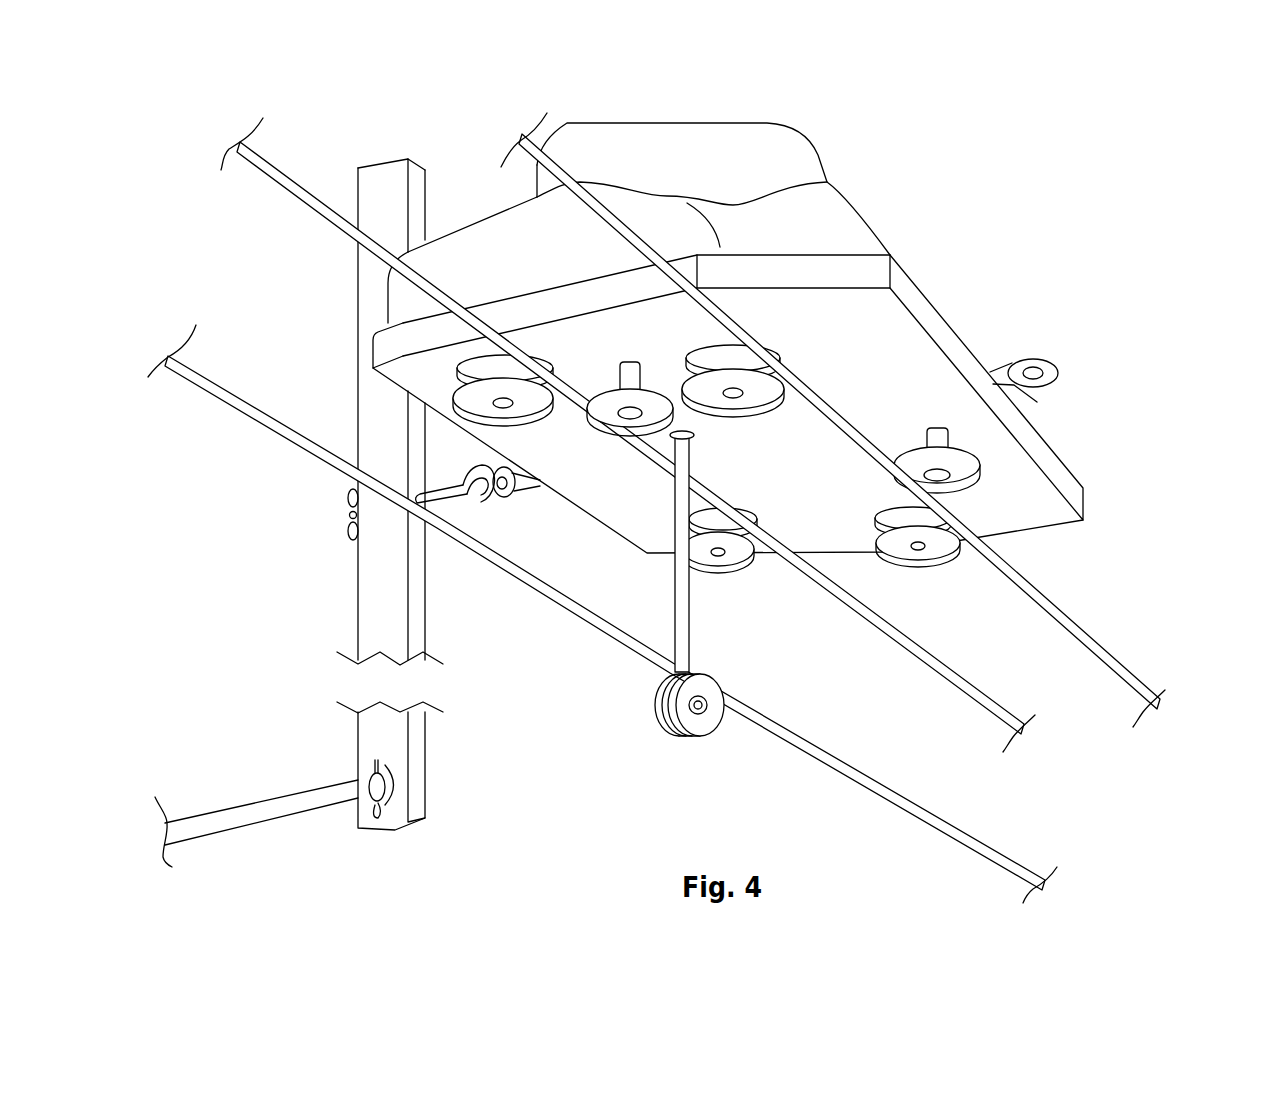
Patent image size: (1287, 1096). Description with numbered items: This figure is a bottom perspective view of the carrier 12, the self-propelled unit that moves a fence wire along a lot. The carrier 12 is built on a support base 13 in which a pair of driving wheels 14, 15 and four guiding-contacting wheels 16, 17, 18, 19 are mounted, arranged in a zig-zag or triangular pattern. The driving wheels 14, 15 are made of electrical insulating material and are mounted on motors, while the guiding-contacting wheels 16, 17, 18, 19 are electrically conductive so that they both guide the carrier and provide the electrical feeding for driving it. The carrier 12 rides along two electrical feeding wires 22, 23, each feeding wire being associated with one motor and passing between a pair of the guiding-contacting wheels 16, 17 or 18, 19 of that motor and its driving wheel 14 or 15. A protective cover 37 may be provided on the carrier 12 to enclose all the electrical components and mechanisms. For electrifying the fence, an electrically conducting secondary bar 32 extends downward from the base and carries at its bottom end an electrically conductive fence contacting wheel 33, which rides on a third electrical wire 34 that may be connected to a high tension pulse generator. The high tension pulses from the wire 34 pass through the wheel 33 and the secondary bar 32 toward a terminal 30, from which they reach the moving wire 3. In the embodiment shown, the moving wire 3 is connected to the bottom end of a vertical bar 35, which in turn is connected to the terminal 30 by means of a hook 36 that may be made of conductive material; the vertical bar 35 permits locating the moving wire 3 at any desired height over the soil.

The moving wire 3 is at (265, 797).
The carrier 12 is at (1007, 233).
The support base 13 is at (887, 347).
The driving wheel 14 is at (968, 492).
The driving wheel 15 is at (602, 420).
The guiding-contacting wheel 16 is at (932, 565).
The guiding-contacting wheel 17 is at (767, 413).
The guiding-contacting wheel 18 is at (740, 565).
The guiding-contacting wheel 19 is at (440, 393).
The electrical feeding wire 22 is at (528, 157).
The electrical feeding wire 23 is at (313, 195).
The terminal 30 is at (1038, 388).
The secondary bar 32 is at (688, 607).
The fence contacting wheel 33 is at (703, 735).
The third electrical wire 34 is at (970, 838).
The vertical bar 35 is at (357, 273).
The hook 36 is at (477, 493).
The protective cover 37 is at (800, 143).